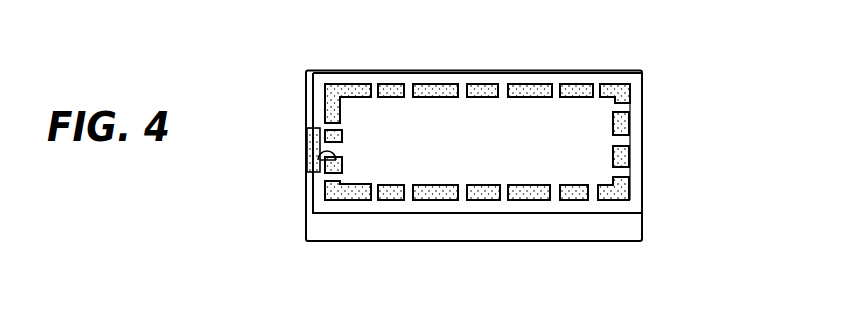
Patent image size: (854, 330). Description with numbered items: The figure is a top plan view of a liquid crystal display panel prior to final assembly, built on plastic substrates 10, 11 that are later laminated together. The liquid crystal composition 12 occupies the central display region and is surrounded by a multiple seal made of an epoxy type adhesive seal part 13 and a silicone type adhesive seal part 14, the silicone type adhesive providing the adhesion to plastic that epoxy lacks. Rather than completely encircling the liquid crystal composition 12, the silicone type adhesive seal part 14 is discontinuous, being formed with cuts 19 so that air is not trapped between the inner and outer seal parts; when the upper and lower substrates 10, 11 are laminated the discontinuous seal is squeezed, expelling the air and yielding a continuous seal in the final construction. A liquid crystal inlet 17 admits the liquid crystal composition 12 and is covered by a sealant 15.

The plastic substrate 10 is at (633, 233).
The plastic substrate 11 is at (638, 187).
The liquid crystal composition 12 is at (532, 110).
The epoxy type adhesive seal part 13 is at (587, 73).
The silicone type adhesive seal part 14 is at (628, 123).
The sealant 15 is at (313, 153).
The liquid crystal inlet 17 is at (327, 168).
The cuts 19 is at (373, 200).